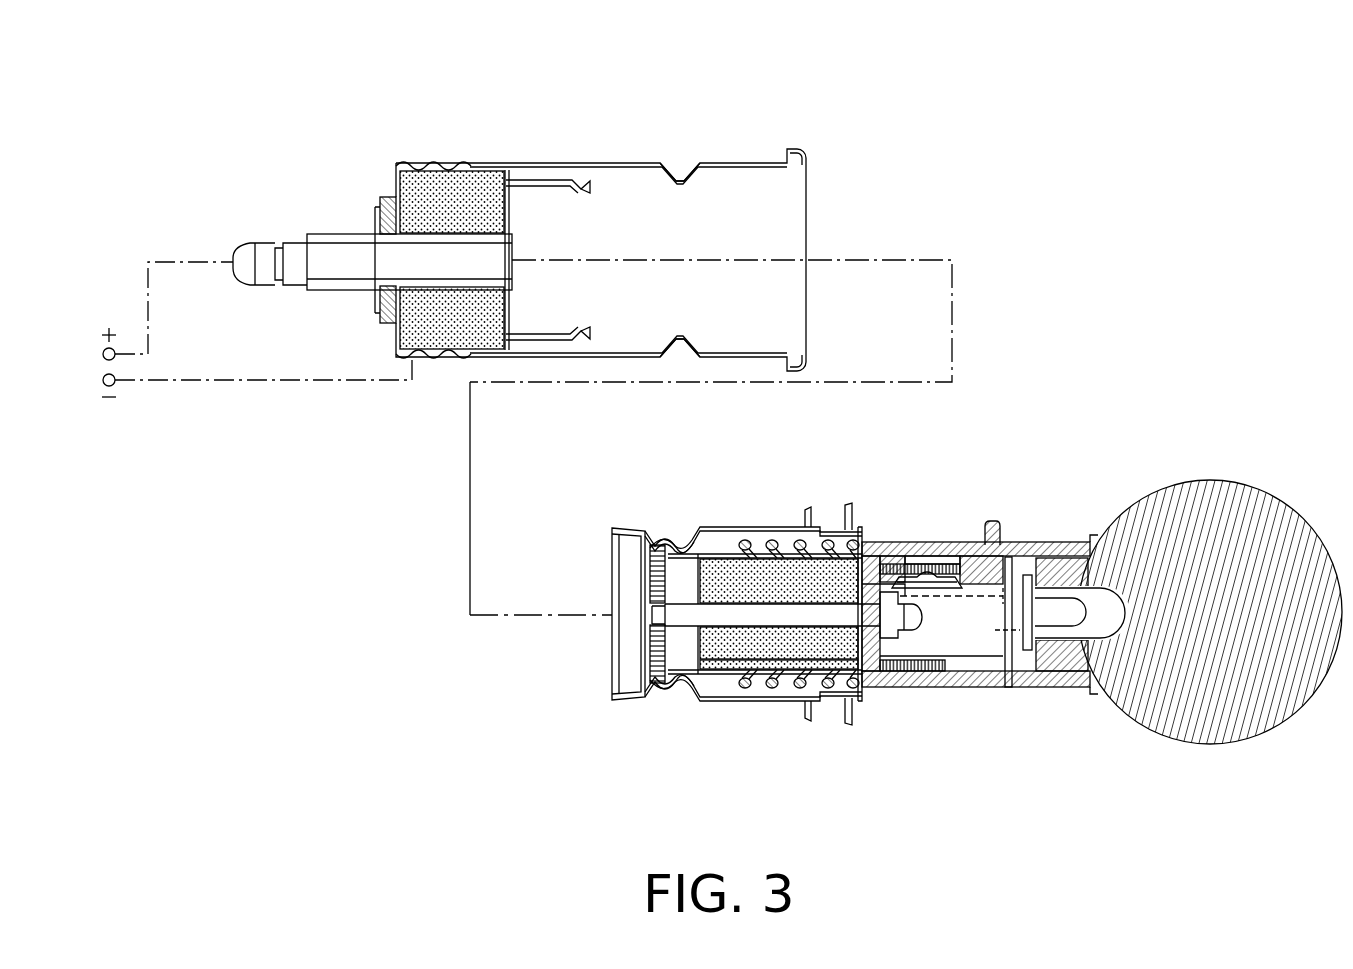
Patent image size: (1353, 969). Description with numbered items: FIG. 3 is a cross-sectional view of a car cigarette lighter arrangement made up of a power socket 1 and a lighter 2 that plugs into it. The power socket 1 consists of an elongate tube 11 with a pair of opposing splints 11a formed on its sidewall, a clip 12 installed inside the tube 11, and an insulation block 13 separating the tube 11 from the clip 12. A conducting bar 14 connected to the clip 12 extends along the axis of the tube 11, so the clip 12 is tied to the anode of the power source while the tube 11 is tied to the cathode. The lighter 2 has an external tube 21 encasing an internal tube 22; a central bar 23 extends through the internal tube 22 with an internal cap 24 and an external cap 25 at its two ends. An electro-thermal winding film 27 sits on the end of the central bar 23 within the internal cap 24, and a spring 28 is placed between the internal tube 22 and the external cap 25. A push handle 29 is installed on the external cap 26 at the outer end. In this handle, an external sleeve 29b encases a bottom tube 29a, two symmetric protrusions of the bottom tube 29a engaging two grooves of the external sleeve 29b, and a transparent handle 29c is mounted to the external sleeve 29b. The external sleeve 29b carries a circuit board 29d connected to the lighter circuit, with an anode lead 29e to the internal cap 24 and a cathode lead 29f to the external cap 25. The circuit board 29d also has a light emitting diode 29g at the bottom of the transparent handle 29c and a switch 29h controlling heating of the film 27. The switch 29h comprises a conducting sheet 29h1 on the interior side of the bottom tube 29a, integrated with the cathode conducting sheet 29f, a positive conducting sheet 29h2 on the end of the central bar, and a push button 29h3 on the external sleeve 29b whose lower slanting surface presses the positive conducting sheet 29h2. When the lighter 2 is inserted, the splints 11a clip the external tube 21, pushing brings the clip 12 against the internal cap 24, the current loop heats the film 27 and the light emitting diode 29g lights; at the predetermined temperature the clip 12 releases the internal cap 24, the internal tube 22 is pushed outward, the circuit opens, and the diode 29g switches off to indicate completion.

The power socket 1 is at (416, 113).
The elongate tube 11 is at (778, 165).
The splints 11a is at (668, 168).
The clip 12 is at (545, 185).
The insulation block 13 is at (445, 205).
The conducting bar 14 is at (345, 250).
The lighter 2 is at (1155, 461).
The external tube 21 is at (715, 528).
The internal tube 22 is at (808, 533).
The central bar 23 is at (728, 665).
The internal cap 24 is at (642, 540).
The external cap 25 is at (850, 535).
The external cap 26 is at (692, 695).
The electro-thermal winding film 27 is at (650, 667).
The spring 28 is at (755, 545).
The push handle 29 is at (1160, 795).
The bottom tube 29a is at (900, 683).
The external sleeve 29b is at (965, 686).
The transparent handle 29c is at (1165, 725).
The circuit board 29d is at (1020, 686).
The anode lead 29e is at (812, 690).
The cathode lead 29f is at (982, 540).
The light emitting diode 29g is at (1070, 688).
The switch 29h is at (1032, 517).
The conducting sheet 29h1 is at (925, 545).
The positive conducting sheet 29h2 is at (890, 545).
The push button 29h3 is at (1005, 545).